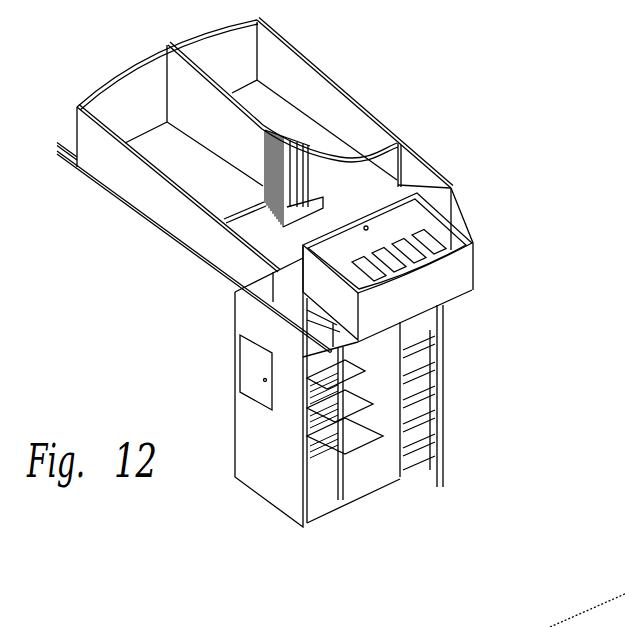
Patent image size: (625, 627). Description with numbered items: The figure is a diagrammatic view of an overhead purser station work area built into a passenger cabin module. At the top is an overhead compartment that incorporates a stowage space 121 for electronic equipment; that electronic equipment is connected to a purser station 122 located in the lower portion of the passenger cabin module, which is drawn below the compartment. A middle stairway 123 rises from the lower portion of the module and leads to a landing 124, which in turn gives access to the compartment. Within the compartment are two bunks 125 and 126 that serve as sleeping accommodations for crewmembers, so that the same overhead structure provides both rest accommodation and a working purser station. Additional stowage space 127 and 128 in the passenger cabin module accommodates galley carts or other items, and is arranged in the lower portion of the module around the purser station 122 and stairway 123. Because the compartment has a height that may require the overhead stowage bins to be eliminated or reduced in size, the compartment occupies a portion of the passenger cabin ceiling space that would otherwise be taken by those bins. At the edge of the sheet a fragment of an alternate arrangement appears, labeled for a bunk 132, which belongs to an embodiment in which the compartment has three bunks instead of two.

The stowage space 121 is at (458, 230).
The purser station 122 is at (426, 360).
The middle stairway 123 is at (357, 440).
The landing 124 is at (281, 259).
The bunk 125 is at (160, 148).
The bunk 126 is at (283, 117).
The additional stowage space 127 is at (322, 498).
The additional stowage space 128 is at (250, 370).
The bunk 132 is at (538, 610).